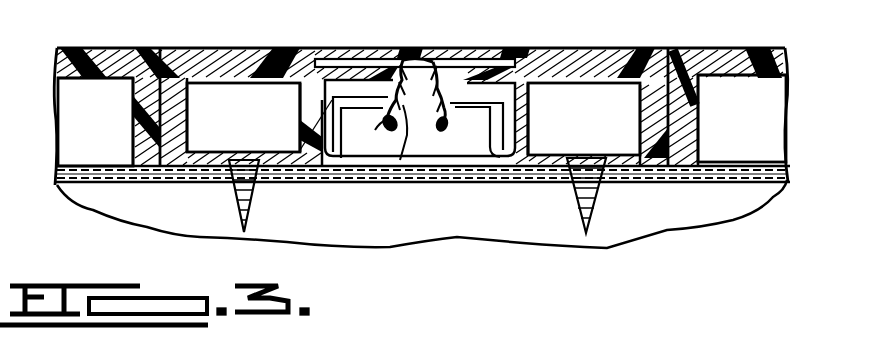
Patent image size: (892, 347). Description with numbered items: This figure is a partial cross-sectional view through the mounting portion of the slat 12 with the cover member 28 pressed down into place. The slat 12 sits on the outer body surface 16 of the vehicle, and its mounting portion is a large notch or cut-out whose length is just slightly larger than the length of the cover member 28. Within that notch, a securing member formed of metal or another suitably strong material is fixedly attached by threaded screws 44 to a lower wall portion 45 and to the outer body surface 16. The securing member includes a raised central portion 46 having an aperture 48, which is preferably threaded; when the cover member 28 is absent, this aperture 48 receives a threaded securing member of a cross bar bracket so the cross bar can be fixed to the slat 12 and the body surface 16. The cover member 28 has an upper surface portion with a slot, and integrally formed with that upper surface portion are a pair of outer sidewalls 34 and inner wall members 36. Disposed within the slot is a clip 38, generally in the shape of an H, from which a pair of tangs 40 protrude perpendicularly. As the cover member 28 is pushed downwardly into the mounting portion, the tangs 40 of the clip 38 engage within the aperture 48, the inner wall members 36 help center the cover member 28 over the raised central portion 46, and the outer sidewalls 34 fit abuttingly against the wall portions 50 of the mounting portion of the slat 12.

The slat 12 is at (112, 57).
The outer body surface 16 is at (772, 188).
The cover member 28 is at (264, 39).
The outer sidewalls 34 is at (193, 123).
The inner wall members 36 is at (300, 118).
The clip 38 is at (327, 44).
The tangs 40 is at (381, 121).
The threaded screws 44 is at (233, 195).
The lower wall portion 45 is at (312, 170).
The raised central portion 46 is at (463, 97).
The aperture 48 is at (410, 108).
The wall portions 50 is at (160, 93).